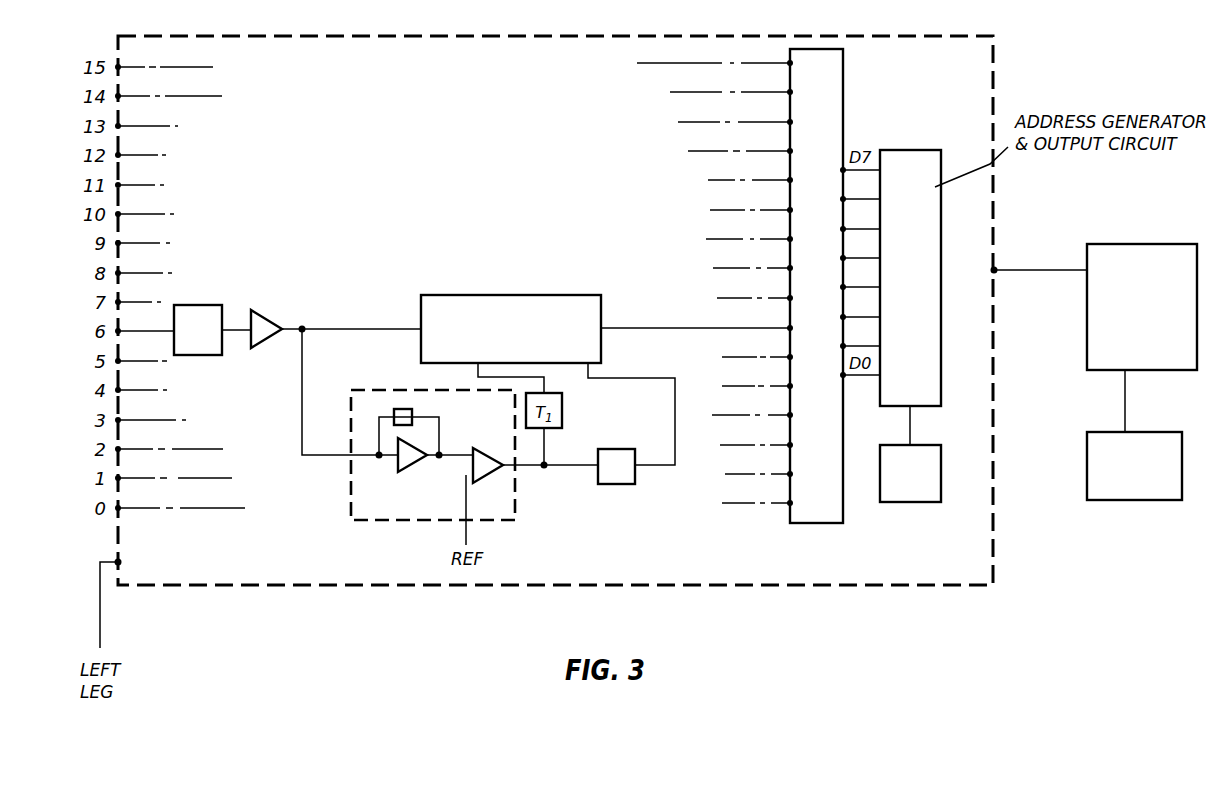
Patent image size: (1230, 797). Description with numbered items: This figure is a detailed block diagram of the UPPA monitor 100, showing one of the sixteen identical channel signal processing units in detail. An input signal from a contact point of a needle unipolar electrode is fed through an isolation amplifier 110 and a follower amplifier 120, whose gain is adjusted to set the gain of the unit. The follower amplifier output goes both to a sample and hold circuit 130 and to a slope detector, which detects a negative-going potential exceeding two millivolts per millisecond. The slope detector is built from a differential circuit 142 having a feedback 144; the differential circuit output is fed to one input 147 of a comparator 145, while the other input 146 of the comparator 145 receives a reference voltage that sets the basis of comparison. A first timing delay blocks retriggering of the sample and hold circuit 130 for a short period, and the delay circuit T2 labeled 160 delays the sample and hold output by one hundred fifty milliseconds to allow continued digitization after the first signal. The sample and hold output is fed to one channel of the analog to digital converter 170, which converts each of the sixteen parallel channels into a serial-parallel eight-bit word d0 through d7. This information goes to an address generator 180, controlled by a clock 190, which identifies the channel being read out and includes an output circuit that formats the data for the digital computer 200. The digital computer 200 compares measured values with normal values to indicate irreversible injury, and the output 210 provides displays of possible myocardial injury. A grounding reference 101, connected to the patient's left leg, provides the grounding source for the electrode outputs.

The UPPA monitor 100 is at (900, 585).
The grounding reference 101 is at (126, 599).
The isolation amplifier 110 is at (207, 307).
The follower amplifier 120 is at (265, 323).
The sample and hold circuit 130 is at (553, 295).
The differential circuit 142 is at (411, 463).
The feedback 144 is at (403, 409).
The comparator 145 is at (496, 478).
The other input of the comparator 146 is at (466, 470).
The one input of the comparator 147 is at (475, 447).
The delay circuit T2 160 is at (627, 484).
The analog to digital converter 170 is at (835, 68).
The address generator 180 is at (915, 157).
The clock 190 is at (935, 455).
The digital computer 200 is at (1112, 246).
The output 210 is at (1087, 448).